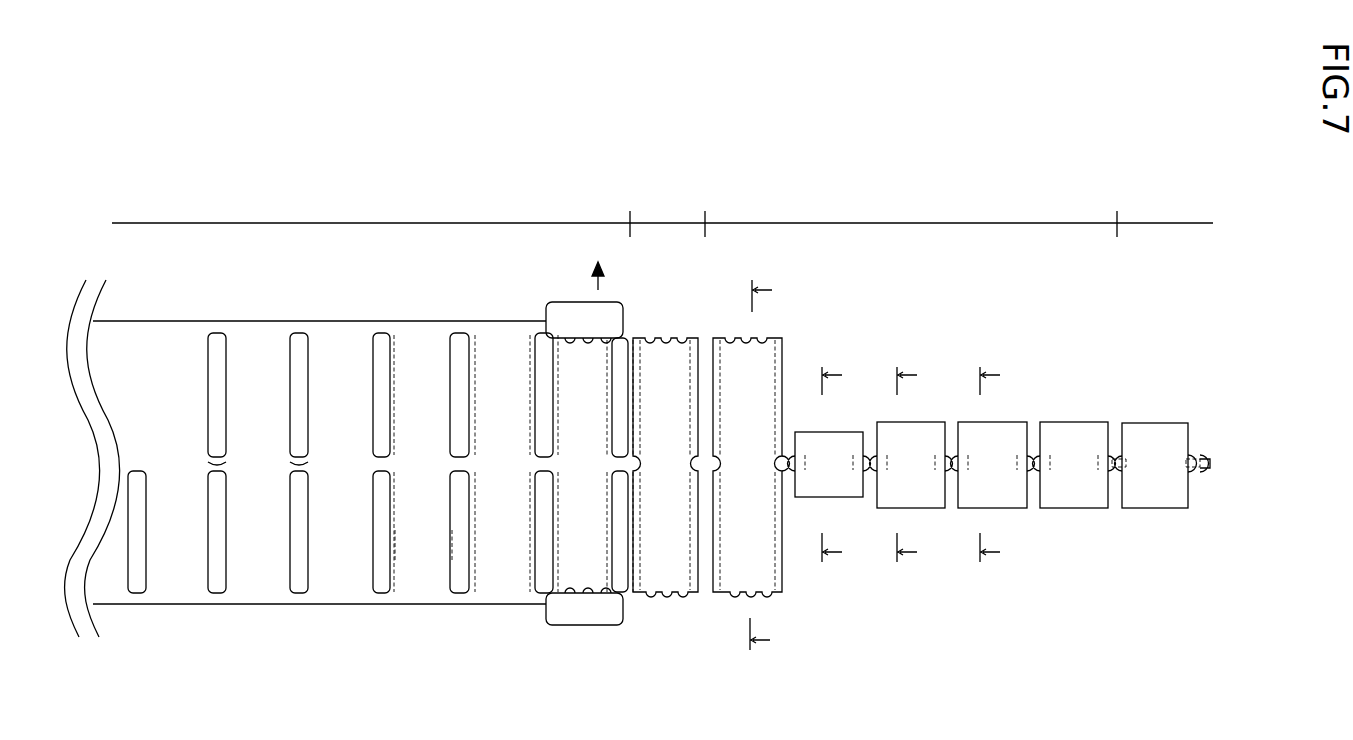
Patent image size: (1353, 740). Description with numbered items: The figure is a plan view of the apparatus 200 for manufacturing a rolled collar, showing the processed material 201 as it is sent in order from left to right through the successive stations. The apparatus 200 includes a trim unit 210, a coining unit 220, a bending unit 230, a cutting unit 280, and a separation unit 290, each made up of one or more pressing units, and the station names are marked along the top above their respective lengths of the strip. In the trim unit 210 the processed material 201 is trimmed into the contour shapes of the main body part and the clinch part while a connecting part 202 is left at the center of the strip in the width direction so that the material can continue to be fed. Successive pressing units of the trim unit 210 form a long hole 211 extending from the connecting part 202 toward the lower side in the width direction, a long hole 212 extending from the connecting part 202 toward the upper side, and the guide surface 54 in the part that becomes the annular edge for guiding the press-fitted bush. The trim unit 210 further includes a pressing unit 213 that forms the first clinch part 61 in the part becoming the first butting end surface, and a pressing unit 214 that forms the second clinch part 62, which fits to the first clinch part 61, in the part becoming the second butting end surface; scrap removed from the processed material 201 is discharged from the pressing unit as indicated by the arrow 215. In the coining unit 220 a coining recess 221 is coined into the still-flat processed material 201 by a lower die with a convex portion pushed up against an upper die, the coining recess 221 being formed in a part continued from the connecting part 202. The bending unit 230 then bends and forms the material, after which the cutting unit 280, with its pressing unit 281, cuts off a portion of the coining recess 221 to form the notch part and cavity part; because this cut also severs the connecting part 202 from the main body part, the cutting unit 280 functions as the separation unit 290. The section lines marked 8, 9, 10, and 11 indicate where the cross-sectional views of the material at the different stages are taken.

The apparatus 200 is at (193, 114).
The trim unit 210 is at (362, 170).
The coining unit 220 is at (618, 163).
The bending unit 230 is at (892, 167).
The cutting unit 280 is at (1140, 107).
The separation unit 290 is at (1128, 166).
The processed material 201 is at (143, 353).
The long hole 212 is at (216, 348).
The long hole 211 is at (137, 575).
The connecting part 202 is at (300, 465).
The guide surface 54 is at (452, 530).
The pressing unit 214 is at (572, 302).
The pressing unit 213 is at (575, 626).
The arrow 215 is at (604, 282).
The second clinch part 62 is at (596, 343).
The first clinch part 61 is at (596, 590).
The coining recess 221 is at (690, 472).
The pressing unit 281 is at (1188, 475).
The 8-8 line 8 is at (772, 467).
The 9-9 line 9 is at (843, 465).
The 10-10 line 10 is at (925, 465).
The 11-11 line 11 is at (1008, 465).